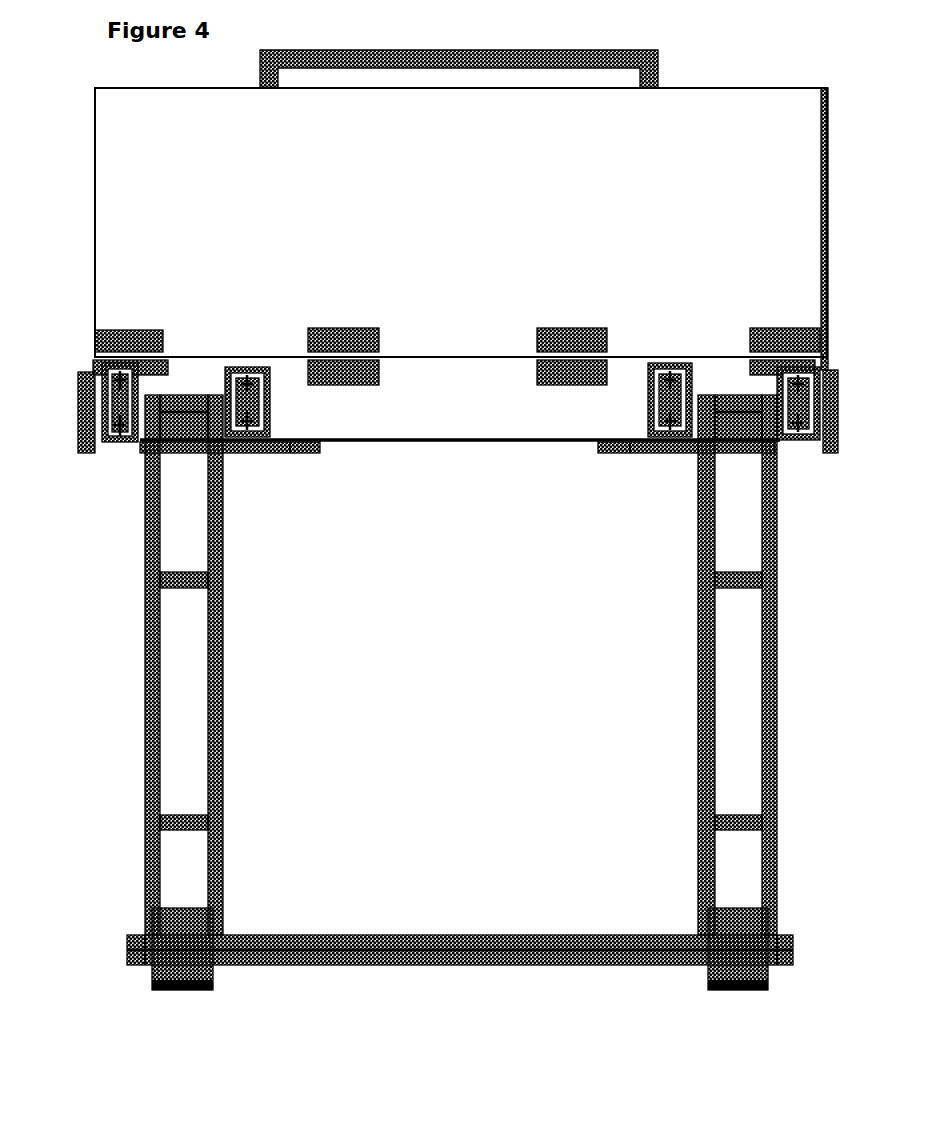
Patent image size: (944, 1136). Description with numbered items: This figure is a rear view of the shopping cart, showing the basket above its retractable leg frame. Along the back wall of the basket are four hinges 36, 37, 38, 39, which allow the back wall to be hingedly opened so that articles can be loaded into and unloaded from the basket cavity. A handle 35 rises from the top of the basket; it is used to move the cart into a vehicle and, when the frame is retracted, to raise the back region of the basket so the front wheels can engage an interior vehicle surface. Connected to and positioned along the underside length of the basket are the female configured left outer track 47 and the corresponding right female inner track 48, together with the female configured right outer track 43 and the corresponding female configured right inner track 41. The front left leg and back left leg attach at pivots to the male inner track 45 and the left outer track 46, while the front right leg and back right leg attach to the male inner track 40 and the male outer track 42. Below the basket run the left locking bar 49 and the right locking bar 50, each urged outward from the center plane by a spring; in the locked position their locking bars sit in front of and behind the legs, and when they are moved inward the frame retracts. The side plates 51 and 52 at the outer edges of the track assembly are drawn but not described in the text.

The handle 35 is at (480, 69).
The hinge 36 is at (120, 338).
The hinge 37 is at (345, 326).
The hinge 38 is at (573, 318).
The hinge 39 is at (795, 345).
The male inner track 40 is at (685, 403).
The female configured right inner track 41 is at (664, 399).
The male outer track 42 is at (793, 405).
The female configured right outer track 43 is at (764, 401).
The male inner track 45 is at (240, 407).
The left outer track 46 is at (132, 403).
The female configured left outer track 47 is at (143, 389).
The right female inner track 48 is at (248, 400).
The left locking bar 49 is at (322, 455).
The right locking bar 50 is at (625, 458).
The right side plate 51 is at (845, 435).
The left side plate 52 is at (73, 435).